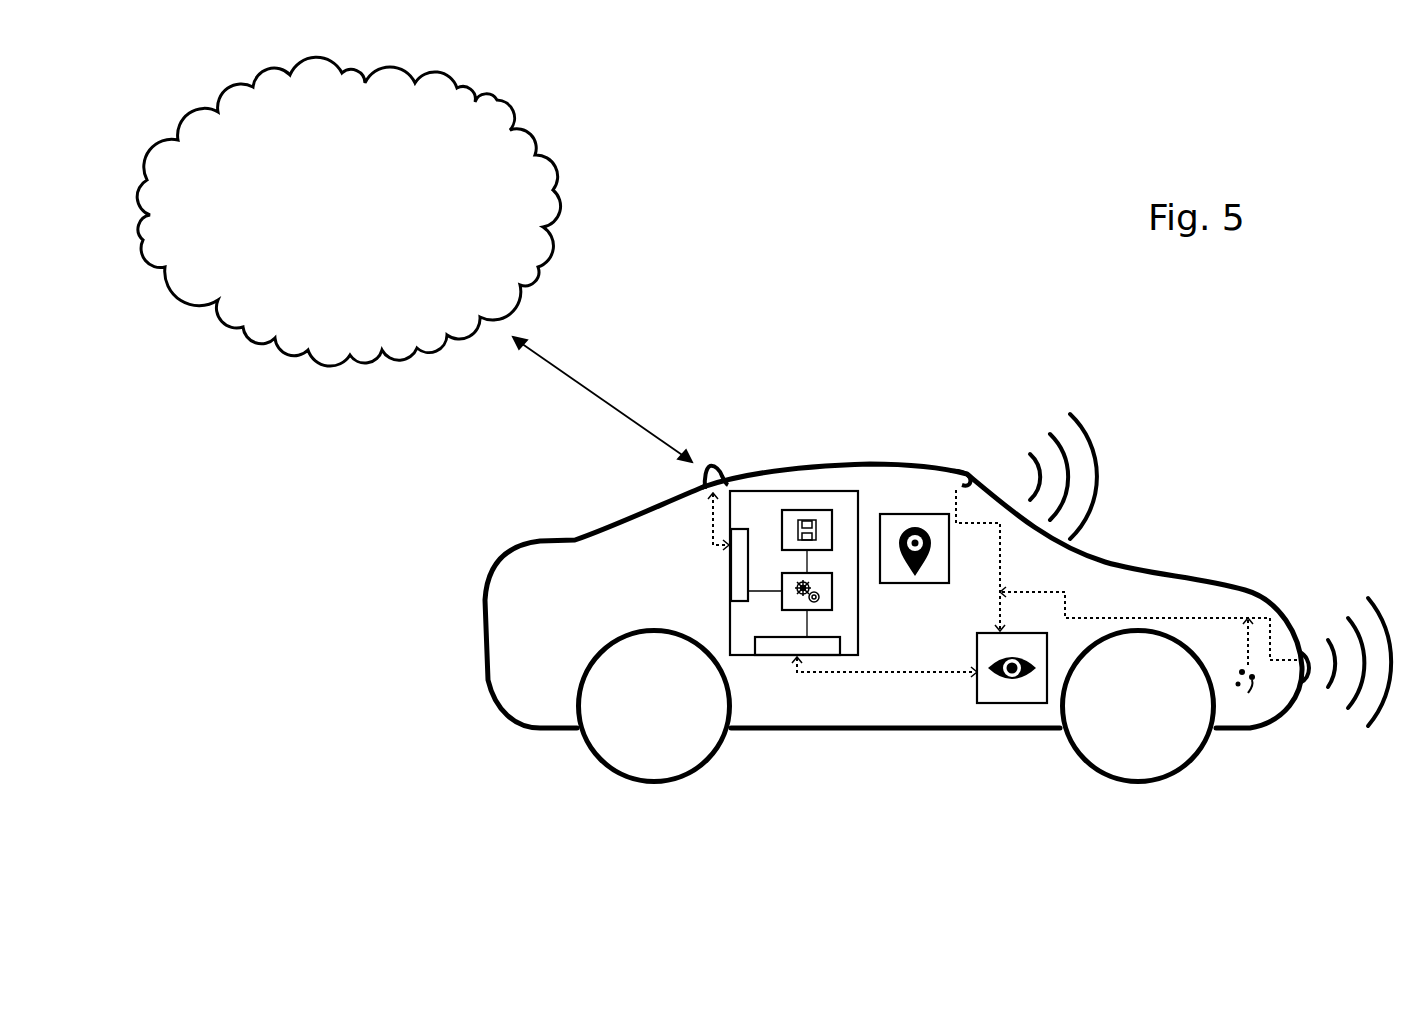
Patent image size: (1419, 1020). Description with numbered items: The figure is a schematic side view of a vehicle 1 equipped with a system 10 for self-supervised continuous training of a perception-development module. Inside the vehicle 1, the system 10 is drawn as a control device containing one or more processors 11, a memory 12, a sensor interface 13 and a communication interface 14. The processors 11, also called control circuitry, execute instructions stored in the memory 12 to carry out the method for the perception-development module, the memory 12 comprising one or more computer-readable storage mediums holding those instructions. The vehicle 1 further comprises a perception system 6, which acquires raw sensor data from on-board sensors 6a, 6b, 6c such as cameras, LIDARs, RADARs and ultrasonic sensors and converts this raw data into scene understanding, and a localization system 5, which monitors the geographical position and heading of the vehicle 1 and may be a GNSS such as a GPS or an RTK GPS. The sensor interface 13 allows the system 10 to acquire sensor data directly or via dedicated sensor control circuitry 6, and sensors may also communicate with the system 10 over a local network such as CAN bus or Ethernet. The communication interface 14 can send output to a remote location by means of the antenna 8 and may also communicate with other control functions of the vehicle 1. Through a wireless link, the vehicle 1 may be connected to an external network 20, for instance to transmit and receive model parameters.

The vehicle 1 is at (505, 724).
The localization system 5 is at (898, 514).
The perception system 6 is at (1024, 705).
The on-board sensor 6a is at (1248, 693).
The on-board sensor 6b is at (1302, 657).
The on-board sensor 6c is at (960, 472).
The antenna 8 is at (720, 470).
The system 10 is at (785, 491).
The processor 11 is at (832, 593).
The memory 12 is at (805, 510).
The sensor interface 13 is at (782, 647).
The communication interface 14 is at (735, 578).
The external network 20 is at (500, 100).